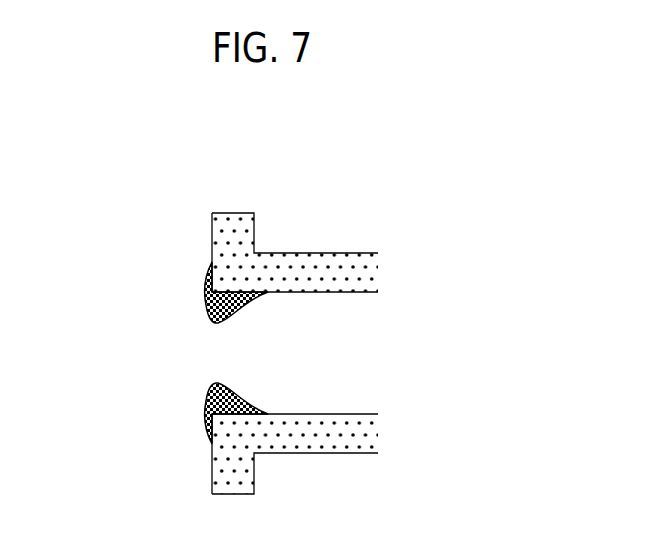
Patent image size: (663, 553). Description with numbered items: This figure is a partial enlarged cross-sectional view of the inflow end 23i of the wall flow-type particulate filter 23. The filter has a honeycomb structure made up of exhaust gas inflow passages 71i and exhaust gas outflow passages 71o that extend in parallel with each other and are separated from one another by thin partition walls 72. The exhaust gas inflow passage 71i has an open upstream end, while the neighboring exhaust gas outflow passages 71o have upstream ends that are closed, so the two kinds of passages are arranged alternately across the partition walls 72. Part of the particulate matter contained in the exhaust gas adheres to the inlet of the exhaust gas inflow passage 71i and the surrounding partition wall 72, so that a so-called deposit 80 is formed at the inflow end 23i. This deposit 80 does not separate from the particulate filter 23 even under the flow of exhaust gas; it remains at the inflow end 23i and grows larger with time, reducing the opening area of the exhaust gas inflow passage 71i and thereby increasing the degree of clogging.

The particulate filter 23 is at (422, 187).
The inflow end 23i is at (190, 397).
The exhaust gas outflow passage 71o is at (378, 246).
The exhaust gas inflow passage 71i is at (378, 367).
The partition wall 72 is at (212, 237).
The deposit 80 is at (207, 318).